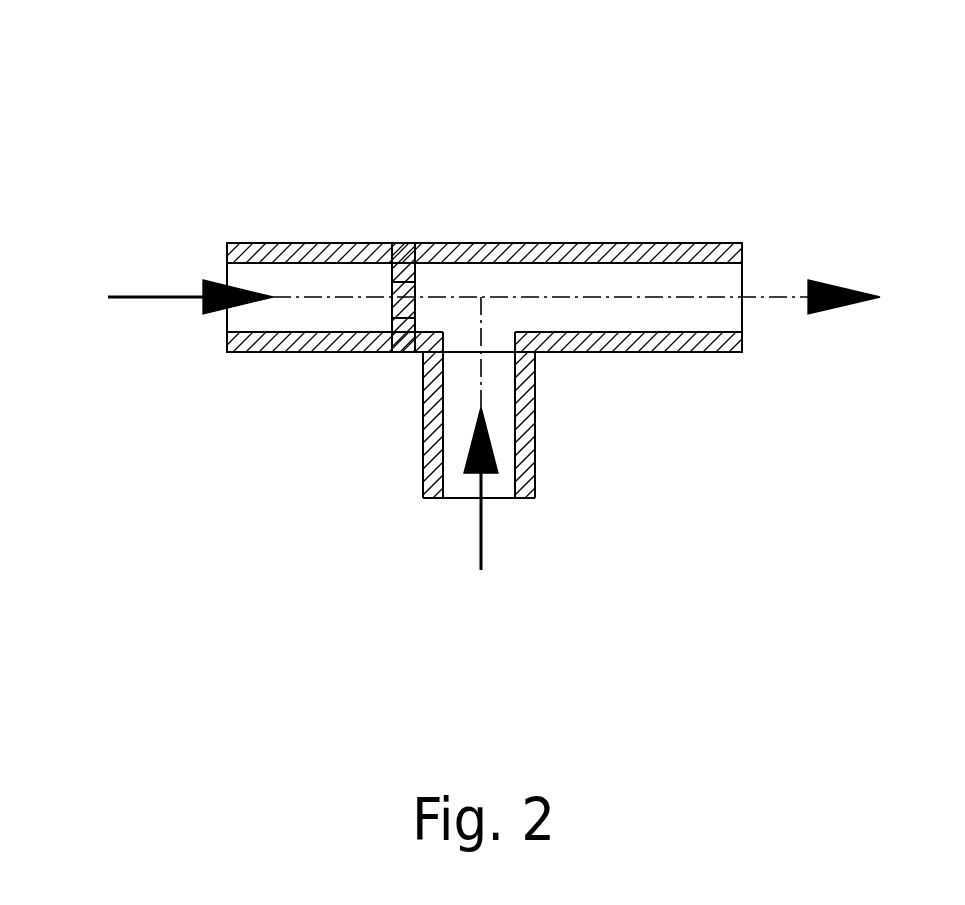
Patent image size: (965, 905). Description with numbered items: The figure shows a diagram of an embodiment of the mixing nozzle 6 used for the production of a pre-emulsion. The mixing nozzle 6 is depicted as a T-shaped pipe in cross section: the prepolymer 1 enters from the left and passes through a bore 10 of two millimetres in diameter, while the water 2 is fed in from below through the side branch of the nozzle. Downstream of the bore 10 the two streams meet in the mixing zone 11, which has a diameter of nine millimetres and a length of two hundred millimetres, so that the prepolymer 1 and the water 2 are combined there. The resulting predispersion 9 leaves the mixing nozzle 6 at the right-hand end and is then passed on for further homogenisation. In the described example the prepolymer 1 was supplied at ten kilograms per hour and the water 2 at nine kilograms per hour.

The prepolymer 1 is at (166, 300).
The water 2 is at (482, 533).
The mixing nozzle 6 is at (495, 243).
The predispersion 9 is at (876, 300).
The bore 10 is at (392, 305).
The mixing zone 11 is at (473, 288).